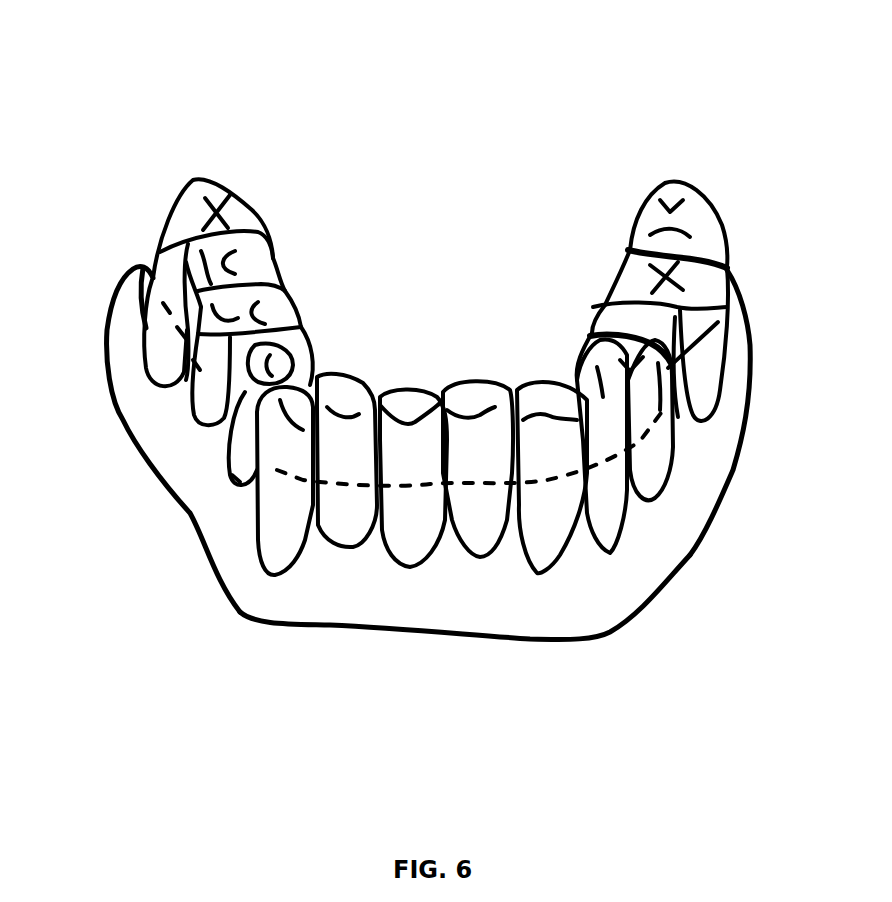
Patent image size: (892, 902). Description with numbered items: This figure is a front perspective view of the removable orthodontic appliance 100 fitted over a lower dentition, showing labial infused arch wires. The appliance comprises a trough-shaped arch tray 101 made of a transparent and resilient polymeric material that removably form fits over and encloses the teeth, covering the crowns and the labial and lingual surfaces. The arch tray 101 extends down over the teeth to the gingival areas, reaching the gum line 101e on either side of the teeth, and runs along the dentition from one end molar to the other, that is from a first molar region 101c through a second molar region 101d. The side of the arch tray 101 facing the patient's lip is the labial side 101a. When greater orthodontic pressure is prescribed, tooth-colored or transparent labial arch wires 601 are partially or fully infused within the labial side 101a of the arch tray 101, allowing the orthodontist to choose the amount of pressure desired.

The removable orthodontic appliance 100 is at (614, 98).
The arch tray 101 is at (746, 262).
The labial side 101a is at (472, 599).
The first molar region 101c is at (246, 215).
The second molar region 101d is at (700, 218).
The gum line 101e is at (140, 464).
The labial arch wires 601 is at (656, 432).